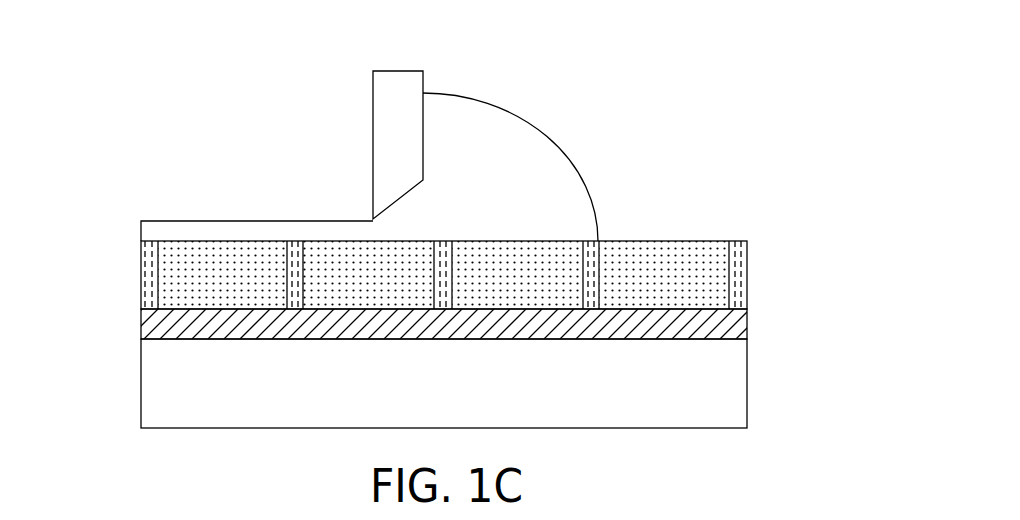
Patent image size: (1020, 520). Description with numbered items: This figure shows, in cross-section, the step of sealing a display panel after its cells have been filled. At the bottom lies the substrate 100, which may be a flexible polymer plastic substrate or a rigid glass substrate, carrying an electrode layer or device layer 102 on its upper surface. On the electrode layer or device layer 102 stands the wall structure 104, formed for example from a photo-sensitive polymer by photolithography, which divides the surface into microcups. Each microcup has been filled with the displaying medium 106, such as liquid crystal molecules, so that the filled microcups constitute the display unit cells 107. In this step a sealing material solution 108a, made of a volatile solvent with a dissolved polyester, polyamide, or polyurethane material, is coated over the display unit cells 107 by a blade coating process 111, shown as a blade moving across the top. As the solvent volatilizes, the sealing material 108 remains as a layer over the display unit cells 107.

The substrate 100 is at (717, 382).
The electrode layer or device layer 102 is at (720, 323).
The wall structure 104 is at (735, 278).
The displaying medium 106 is at (188, 283).
The display unit cells 107 is at (677, 225).
The sealing material 108 is at (158, 234).
The sealing material solution 108a is at (532, 169).
The blade coating process 111 is at (487, 70).